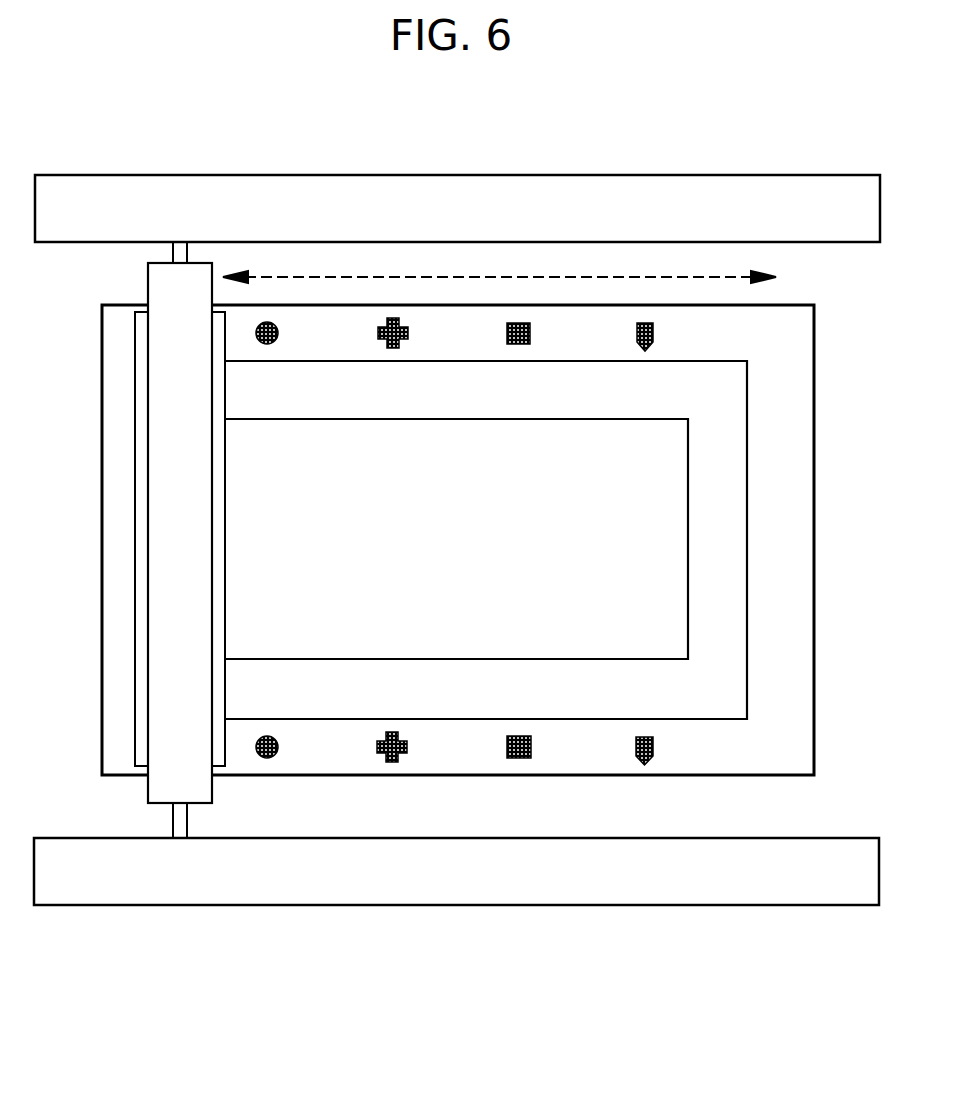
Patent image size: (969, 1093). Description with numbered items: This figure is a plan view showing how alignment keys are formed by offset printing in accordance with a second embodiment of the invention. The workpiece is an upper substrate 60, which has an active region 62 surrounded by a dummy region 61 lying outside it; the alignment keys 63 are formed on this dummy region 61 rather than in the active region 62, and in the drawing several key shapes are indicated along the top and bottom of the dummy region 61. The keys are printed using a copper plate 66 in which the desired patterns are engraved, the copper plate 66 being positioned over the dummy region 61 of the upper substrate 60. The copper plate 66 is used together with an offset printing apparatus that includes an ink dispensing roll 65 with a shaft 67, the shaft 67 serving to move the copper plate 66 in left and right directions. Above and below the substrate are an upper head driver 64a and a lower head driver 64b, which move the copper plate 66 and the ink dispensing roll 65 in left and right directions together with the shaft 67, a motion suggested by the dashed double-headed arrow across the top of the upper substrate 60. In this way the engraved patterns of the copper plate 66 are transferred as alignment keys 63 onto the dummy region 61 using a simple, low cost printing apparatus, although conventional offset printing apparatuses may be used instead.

The upper substrate 60 is at (815, 648).
The dummy region 61 is at (775, 518).
The active region 62 is at (688, 443).
The alignment keys 63 is at (276, 338).
The upper head driver 64a is at (833, 183).
The lower head driver 64b is at (832, 895).
The ink dispensing roll 65 is at (158, 277).
The copper plate 66 is at (135, 450).
The shaft 67 is at (185, 820).